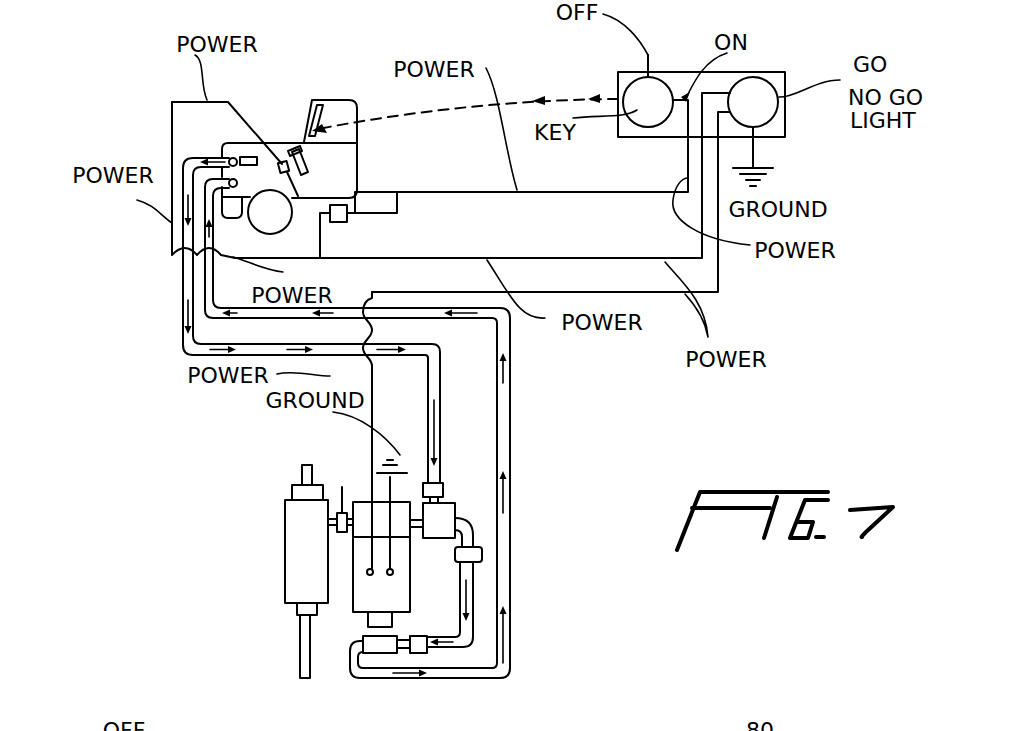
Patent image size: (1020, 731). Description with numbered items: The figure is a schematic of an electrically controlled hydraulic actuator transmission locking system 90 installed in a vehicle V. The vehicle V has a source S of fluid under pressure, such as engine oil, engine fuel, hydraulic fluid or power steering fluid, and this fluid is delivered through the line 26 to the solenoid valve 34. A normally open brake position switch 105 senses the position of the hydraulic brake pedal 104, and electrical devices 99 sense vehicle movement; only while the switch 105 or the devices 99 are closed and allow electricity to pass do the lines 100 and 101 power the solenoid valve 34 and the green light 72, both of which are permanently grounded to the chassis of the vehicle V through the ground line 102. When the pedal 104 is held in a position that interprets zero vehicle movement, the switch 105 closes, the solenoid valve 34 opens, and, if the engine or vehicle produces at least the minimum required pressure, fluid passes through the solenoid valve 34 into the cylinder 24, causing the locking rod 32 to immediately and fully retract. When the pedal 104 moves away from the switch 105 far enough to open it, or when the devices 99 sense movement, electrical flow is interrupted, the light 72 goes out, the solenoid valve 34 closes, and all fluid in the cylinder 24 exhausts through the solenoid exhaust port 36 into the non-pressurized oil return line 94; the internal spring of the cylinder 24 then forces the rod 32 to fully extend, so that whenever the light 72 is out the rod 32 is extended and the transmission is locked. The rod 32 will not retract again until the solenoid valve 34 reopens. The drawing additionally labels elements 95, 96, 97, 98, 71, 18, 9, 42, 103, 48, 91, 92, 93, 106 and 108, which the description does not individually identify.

The vehicle power unit 95 is at (172, 115).
The switch 105 is at (268, 145).
The hydraulic brake pedal 104 is at (300, 163).
The vehicle V is at (327, 98).
The source of fluid under pressure S is at (228, 157).
The wire 96 is at (376, 190).
The power wire 97 is at (625, 192).
The relay 98 is at (400, 208).
The devices 99 is at (350, 216).
The line 100 is at (540, 258).
The line 101 is at (718, 280).
The ground line 102 is at (755, 157).
The key switch 71 is at (630, 84).
The light 72 is at (765, 93).
The supply hose 18 is at (210, 288).
The line 26 is at (184, 327).
The conduit 9 is at (442, 372).
The non-pressurized oil return line 94 is at (512, 380).
The electrically controlled hydraulic actuator transmission locking system 90 is at (236, 426).
The fitting 42 is at (342, 487).
The locking rod 32 is at (302, 472).
The cylinder 24 is at (287, 538).
The solenoid exhaust port 36 is at (297, 612).
The solenoid valve 34 is at (397, 567).
The ground wire 103 is at (392, 487).
The valve block 48 is at (456, 518).
The fitting 91 is at (482, 553).
The conduit 92 is at (477, 612).
The conduit 93 is at (452, 680).
The fitting 106 is at (356, 683).
The fitting 108 is at (405, 683).